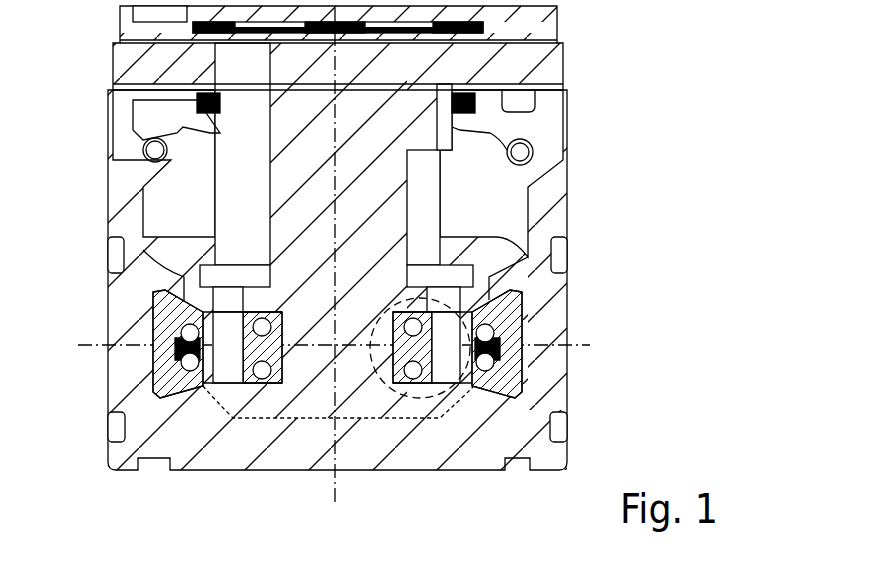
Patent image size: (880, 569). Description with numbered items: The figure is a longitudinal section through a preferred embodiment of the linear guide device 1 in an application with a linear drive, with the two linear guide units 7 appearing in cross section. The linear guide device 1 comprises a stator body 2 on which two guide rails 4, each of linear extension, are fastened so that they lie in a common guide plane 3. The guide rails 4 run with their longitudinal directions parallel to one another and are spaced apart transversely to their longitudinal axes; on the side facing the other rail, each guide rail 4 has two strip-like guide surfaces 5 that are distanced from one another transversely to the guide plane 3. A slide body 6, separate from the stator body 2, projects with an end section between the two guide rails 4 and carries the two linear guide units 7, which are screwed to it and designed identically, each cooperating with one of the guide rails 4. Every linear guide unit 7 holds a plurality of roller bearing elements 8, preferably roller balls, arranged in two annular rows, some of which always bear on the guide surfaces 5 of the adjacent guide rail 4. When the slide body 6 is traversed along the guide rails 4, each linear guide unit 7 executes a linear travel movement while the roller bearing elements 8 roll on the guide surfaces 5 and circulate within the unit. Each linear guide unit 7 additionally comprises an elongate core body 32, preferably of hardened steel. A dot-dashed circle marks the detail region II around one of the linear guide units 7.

The linear guide device 1 is at (360, 280).
The stator body 2 is at (548, 330).
The guide plane 3 is at (590, 348).
The guide rails 4 is at (168, 390).
The guide surfaces 5 is at (188, 323).
The slide body 6 is at (547, 62).
The linear guide units 7 is at (251, 405).
The roller bearing elements 8 is at (185, 348).
The core body 32 is at (375, 375).
The detail view marker II is at (540, 302).